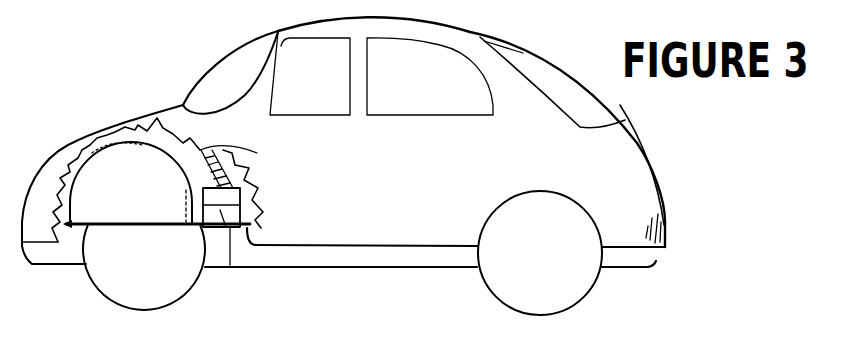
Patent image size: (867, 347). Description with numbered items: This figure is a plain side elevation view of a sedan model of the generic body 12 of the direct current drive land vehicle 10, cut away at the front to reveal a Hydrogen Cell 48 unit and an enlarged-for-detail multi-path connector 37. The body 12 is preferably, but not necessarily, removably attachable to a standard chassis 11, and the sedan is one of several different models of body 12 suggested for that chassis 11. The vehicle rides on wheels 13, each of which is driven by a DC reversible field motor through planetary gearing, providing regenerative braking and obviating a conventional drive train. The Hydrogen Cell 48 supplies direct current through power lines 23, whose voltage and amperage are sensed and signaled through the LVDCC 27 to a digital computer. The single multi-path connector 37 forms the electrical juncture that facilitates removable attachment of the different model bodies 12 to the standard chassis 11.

The direct current drive land vehicle 10 is at (81, 57).
The chassis 11 is at (646, 257).
The body 12 is at (633, 165).
The wheel 13 is at (112, 278).
The power lines 23 is at (150, 130).
The LVDCC 27 is at (257, 153).
The multi-path connector 37 is at (222, 213).
The Hydrogen Cell 48 is at (150, 198).